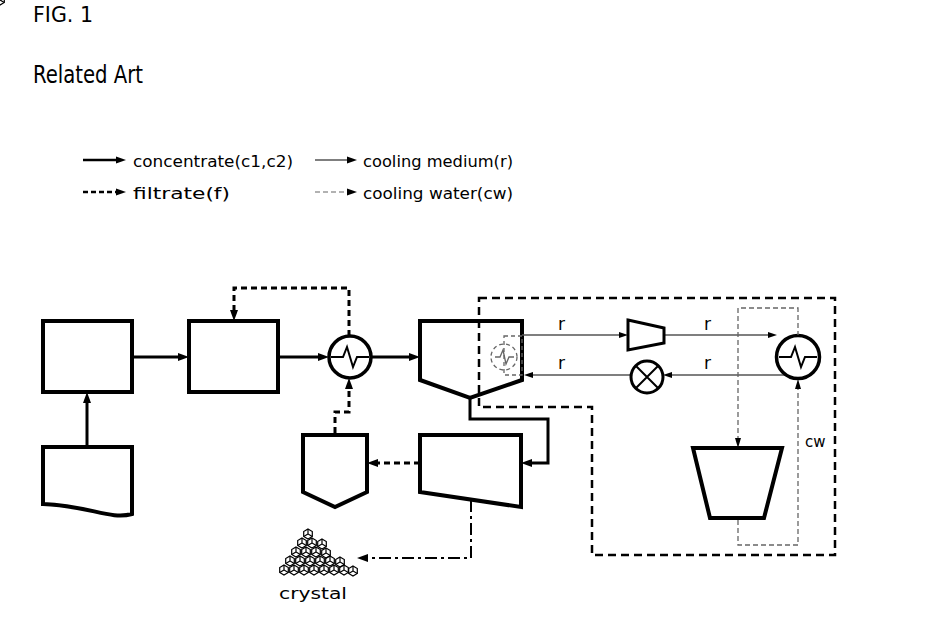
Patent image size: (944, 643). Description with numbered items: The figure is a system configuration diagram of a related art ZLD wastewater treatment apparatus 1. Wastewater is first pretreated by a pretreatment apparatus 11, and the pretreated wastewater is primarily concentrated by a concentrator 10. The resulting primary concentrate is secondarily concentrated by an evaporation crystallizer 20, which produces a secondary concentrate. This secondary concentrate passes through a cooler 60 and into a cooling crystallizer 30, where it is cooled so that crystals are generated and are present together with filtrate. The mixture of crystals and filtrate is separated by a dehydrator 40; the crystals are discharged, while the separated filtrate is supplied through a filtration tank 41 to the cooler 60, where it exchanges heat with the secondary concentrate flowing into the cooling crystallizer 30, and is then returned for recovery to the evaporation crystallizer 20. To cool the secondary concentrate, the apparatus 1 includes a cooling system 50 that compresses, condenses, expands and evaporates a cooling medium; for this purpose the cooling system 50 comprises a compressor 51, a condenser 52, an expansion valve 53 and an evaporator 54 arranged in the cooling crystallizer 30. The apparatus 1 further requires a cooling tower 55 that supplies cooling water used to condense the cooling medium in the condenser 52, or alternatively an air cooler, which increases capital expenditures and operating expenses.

The ZLD wastewater treatment apparatus 1 is at (562, 240).
The concentrator 10 is at (90, 320).
The pretreatment apparatus 11 is at (132, 494).
The evaporation crystallizer 20 is at (210, 320).
The cooling crystallizer 30 is at (455, 320).
The dehydrator 40 is at (495, 508).
The filtration tank 41 is at (303, 460).
The cooling system 50 is at (723, 297).
The compressor 51 is at (645, 319).
The condenser 52 is at (820, 352).
The expansion valve 53 is at (645, 393).
The evaporator 54 is at (494, 344).
The cooling tower 55 is at (715, 518).
The cooler 60 is at (362, 338).